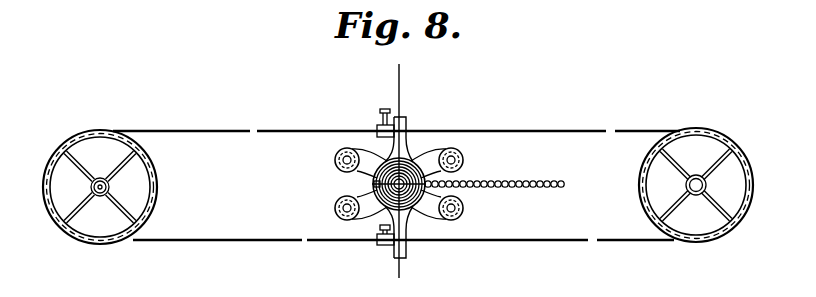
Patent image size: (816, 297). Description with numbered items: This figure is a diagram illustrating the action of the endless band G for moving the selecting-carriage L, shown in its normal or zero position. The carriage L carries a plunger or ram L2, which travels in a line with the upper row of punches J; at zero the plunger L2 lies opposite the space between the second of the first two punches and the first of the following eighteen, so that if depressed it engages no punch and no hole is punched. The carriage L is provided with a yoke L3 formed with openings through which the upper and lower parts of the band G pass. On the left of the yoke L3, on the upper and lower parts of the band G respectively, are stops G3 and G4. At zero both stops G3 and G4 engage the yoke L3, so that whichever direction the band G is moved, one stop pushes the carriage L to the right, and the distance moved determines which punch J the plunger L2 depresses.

The endless band G is at (546, 130).
The upper stop G3 is at (377, 128).
The lower stop G4 is at (377, 245).
The carriage L is at (465, 163).
The plunger L2 is at (373, 184).
The yoke L3 is at (405, 127).
The punches J is at (505, 184).